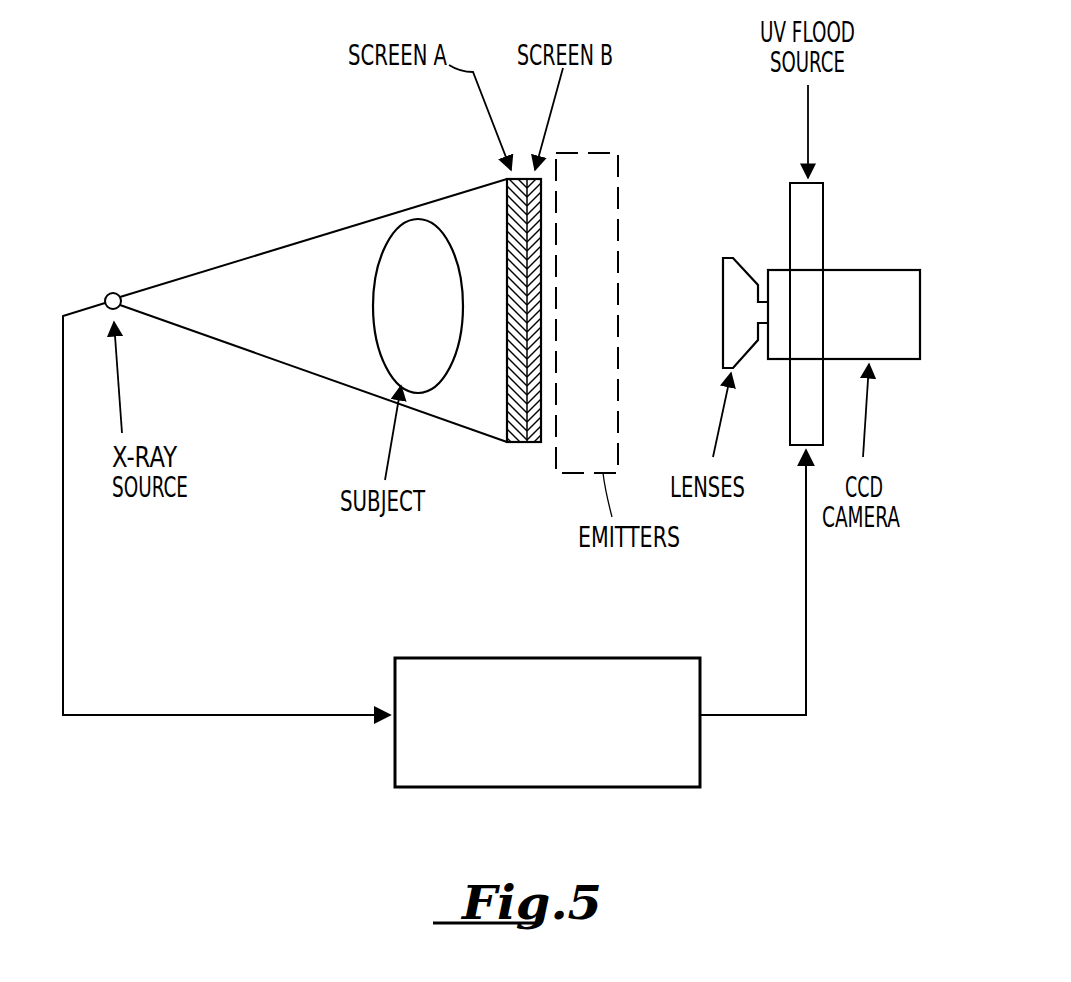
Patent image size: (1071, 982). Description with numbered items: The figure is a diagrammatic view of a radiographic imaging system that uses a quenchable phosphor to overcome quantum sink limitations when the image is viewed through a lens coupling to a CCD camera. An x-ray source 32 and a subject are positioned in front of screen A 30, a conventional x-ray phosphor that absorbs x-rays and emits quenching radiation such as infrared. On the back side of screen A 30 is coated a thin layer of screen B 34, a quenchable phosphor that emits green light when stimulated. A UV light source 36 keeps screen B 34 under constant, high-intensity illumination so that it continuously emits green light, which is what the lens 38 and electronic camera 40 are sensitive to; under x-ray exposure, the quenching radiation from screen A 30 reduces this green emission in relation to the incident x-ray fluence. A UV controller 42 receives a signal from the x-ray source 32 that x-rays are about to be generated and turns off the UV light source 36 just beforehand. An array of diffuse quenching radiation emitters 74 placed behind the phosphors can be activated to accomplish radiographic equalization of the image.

The screen A 30 is at (555, 330).
The x-ray source 32 is at (115, 292).
The screen B 34 is at (534, 240).
The UV light source 36 is at (817, 200).
The lens 38 is at (732, 257).
The electronic camera 40 is at (867, 268).
The UV controller 42 is at (632, 672).
The quenching radiation emitters 74 is at (618, 432).